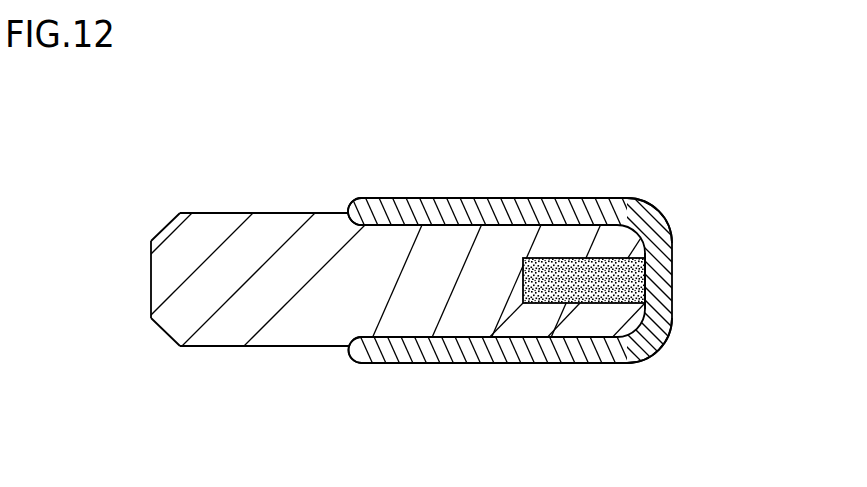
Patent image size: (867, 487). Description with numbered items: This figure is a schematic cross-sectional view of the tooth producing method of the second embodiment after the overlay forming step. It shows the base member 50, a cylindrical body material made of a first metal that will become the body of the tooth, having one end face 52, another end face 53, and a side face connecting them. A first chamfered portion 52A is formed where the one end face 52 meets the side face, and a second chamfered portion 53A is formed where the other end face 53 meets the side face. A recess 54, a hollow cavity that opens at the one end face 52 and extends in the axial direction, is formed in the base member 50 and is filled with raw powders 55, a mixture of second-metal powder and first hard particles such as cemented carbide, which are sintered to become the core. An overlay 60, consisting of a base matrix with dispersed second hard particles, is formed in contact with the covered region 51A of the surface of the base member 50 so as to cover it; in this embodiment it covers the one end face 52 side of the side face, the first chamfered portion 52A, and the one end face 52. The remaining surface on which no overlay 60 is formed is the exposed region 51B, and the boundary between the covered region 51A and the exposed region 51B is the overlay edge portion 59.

The base member 50 is at (210, 192).
The covered region 51A is at (427, 225).
The exposed region 51B is at (265, 213).
The one end face 52 is at (648, 256).
The first chamfered portion 52A is at (658, 223).
The other end face 53 is at (151, 283).
The second chamfered portion 53A is at (163, 229).
The recess 54 is at (643, 287).
The raw powders 55 is at (588, 268).
The overlay edge portion 59 is at (344, 210).
The overlay 60 is at (506, 206).